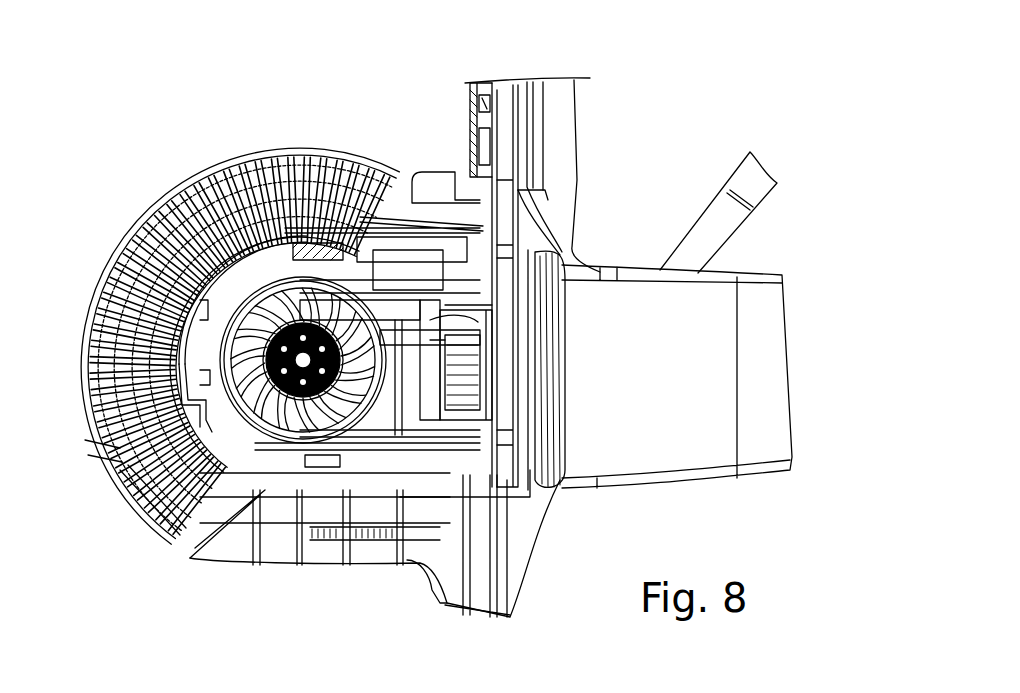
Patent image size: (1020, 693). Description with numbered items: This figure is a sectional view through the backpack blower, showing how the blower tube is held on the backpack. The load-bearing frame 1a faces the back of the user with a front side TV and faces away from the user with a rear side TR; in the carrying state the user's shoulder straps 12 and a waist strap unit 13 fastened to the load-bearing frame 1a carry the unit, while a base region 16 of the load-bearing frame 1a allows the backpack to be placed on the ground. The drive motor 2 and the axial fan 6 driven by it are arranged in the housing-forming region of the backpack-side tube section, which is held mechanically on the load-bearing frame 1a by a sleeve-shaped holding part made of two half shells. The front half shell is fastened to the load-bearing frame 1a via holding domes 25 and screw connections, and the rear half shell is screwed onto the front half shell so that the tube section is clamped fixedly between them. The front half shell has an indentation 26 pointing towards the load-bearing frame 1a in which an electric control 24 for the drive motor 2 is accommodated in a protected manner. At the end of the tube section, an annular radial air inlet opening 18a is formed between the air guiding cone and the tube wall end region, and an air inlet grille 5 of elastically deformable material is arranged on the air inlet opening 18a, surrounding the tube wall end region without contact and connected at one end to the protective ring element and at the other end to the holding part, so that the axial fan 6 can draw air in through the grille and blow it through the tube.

The load-bearing frame 1a is at (562, 80).
The rear side TR is at (468, 132).
The front side TV is at (513, 249).
The holding domes 25 is at (365, 262).
The shoulder straps 12 is at (760, 198).
The waist strap unit 13 is at (757, 282).
The indentation 26 is at (487, 320).
The electric control 24 is at (473, 377).
The radial air inlet opening 18a is at (128, 465).
The air inlet grille 5 is at (137, 480).
The axial fan 6 is at (357, 428).
The base region 16 is at (370, 550).
The drive motor 2 is at (368, 428).